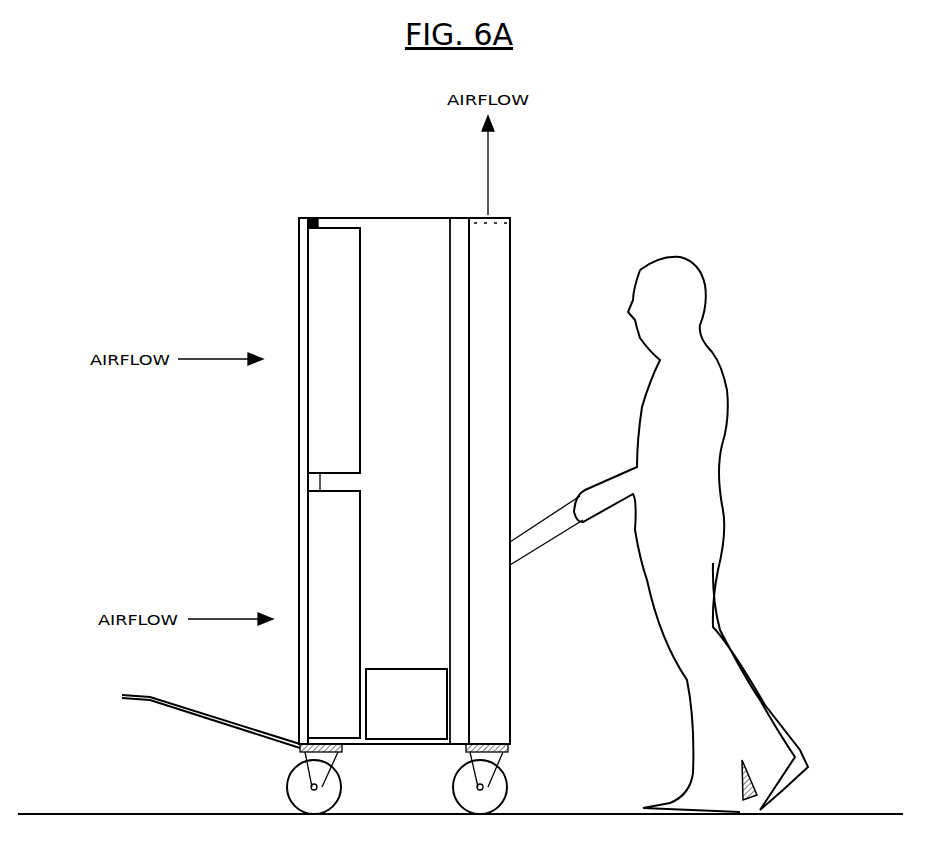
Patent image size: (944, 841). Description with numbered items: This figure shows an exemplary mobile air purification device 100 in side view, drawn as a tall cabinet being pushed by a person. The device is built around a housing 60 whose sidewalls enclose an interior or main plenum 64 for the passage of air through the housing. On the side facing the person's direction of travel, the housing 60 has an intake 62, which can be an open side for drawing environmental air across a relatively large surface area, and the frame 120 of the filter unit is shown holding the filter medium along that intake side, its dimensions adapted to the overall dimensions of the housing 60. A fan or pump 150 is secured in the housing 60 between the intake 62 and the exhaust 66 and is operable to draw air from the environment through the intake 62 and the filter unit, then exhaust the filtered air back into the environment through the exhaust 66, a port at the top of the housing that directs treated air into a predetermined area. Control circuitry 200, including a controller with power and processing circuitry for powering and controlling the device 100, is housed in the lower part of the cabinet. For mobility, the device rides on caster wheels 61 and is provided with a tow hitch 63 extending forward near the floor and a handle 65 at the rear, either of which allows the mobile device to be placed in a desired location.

The housing 60 is at (375, 218).
The caster wheels 61 is at (296, 778).
The intake 62 is at (300, 218).
The tow hitch 63 is at (208, 716).
The main plenum 64 is at (405, 481).
The handle 65 is at (552, 540).
The exhaust 66 is at (500, 218).
The air purification device 100 is at (297, 290).
The frame 120 is at (308, 384).
The fan or pump 150 is at (470, 290).
The control circuitry 200 is at (406, 704).